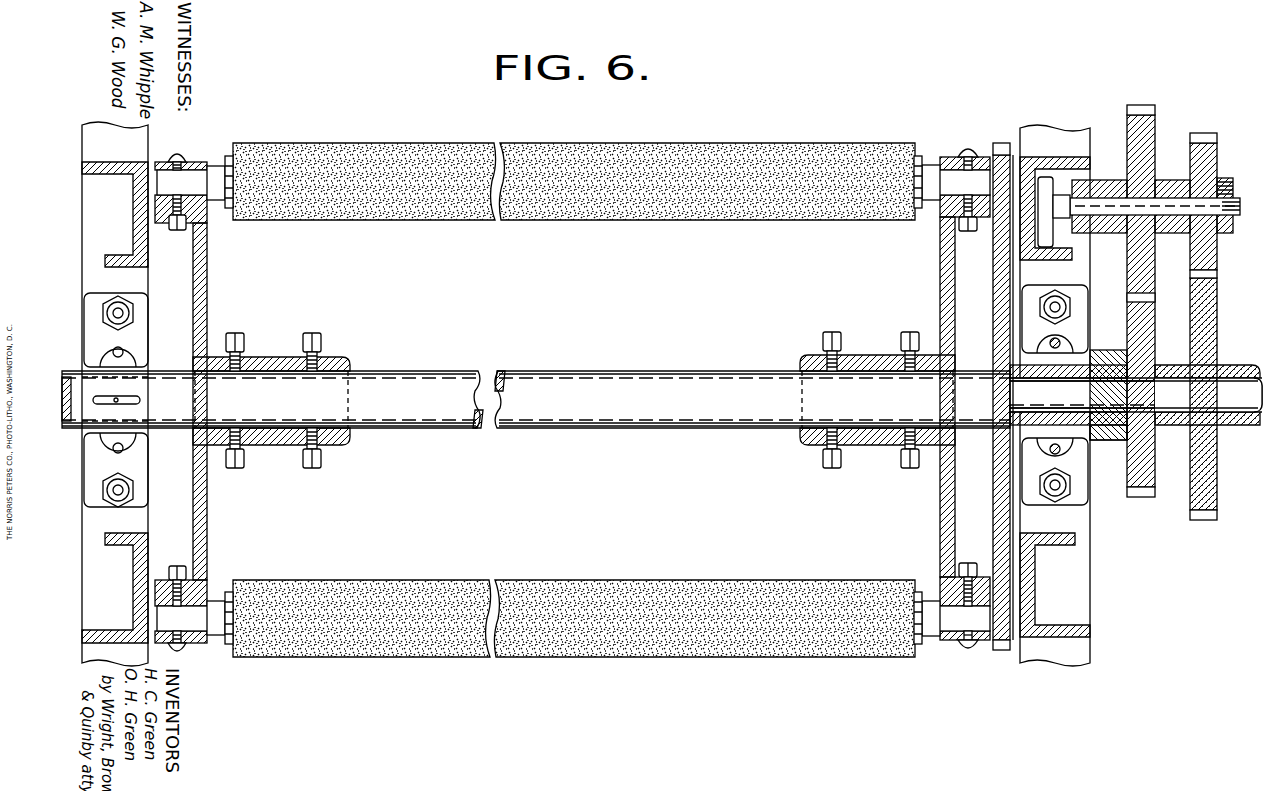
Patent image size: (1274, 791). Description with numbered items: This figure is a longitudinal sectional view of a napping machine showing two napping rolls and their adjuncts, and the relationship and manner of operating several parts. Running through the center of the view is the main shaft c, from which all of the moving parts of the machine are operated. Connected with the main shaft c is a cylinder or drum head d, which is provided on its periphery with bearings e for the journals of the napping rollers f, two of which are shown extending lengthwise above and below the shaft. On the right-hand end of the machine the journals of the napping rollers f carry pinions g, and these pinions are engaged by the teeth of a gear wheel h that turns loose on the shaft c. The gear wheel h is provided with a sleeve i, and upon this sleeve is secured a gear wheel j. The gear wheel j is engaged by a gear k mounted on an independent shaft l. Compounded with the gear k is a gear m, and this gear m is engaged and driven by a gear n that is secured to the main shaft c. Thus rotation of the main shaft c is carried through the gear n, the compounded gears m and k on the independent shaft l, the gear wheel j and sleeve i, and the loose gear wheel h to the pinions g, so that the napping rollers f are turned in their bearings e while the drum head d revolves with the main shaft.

The main shaft c is at (662, 399).
The cylinder or drum head d is at (211, 517).
The bearings e is at (192, 164).
The napping rollers f is at (574, 384).
The pinions g is at (1001, 143).
The gear wheel h is at (995, 313).
The sleeve i is at (1094, 362).
The gear wheel j is at (1156, 455).
The gear k is at (1156, 122).
The independent shaft l is at (1240, 205).
The gear m is at (1207, 133).
The gear n is at (1192, 318).